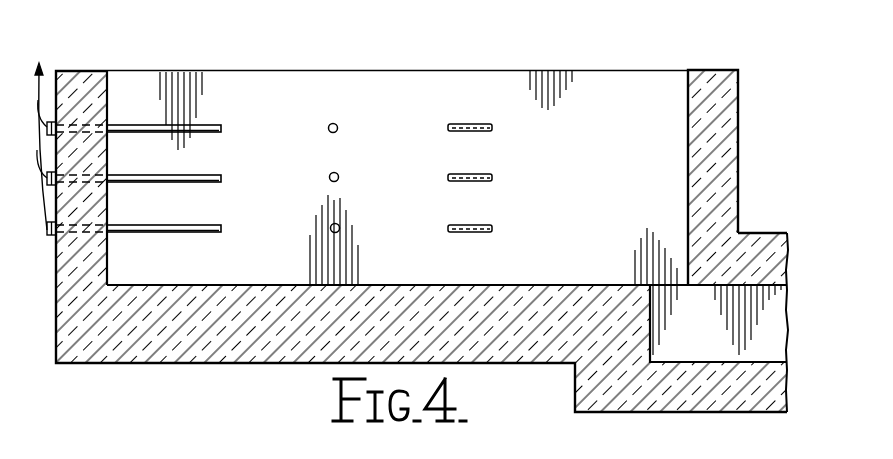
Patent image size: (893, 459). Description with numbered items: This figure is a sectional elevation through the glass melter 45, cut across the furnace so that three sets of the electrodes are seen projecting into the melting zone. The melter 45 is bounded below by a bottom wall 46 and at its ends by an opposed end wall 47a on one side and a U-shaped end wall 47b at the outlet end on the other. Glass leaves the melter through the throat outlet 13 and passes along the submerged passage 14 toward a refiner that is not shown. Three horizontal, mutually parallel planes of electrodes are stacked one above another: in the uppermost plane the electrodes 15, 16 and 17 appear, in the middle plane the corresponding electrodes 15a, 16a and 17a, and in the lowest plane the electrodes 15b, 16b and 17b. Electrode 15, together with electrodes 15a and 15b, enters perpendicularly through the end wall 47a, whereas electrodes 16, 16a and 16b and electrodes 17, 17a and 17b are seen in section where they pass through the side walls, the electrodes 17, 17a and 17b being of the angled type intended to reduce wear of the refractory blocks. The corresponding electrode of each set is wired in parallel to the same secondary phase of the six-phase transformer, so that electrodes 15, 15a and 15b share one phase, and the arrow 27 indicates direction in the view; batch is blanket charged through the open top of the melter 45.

The throat outlet 13 is at (667, 283).
The submerged passage 14 is at (762, 297).
The electrode 15 is at (218, 124).
The electrode 15a is at (218, 175).
The electrode 15b is at (218, 225).
The electrode 16 is at (337, 124).
The electrode 16a is at (338, 173).
The electrode 16b is at (339, 224).
The electrode 17 is at (486, 123).
The electrode 17a is at (486, 174).
The electrode 17b is at (486, 225).
The direction of movement 27 is at (41, 70).
The melter 45 is at (424, 225).
The bottom wall 46 is at (219, 372).
The end wall 47a is at (88, 75).
The U-shaped end wall 47b is at (731, 134).